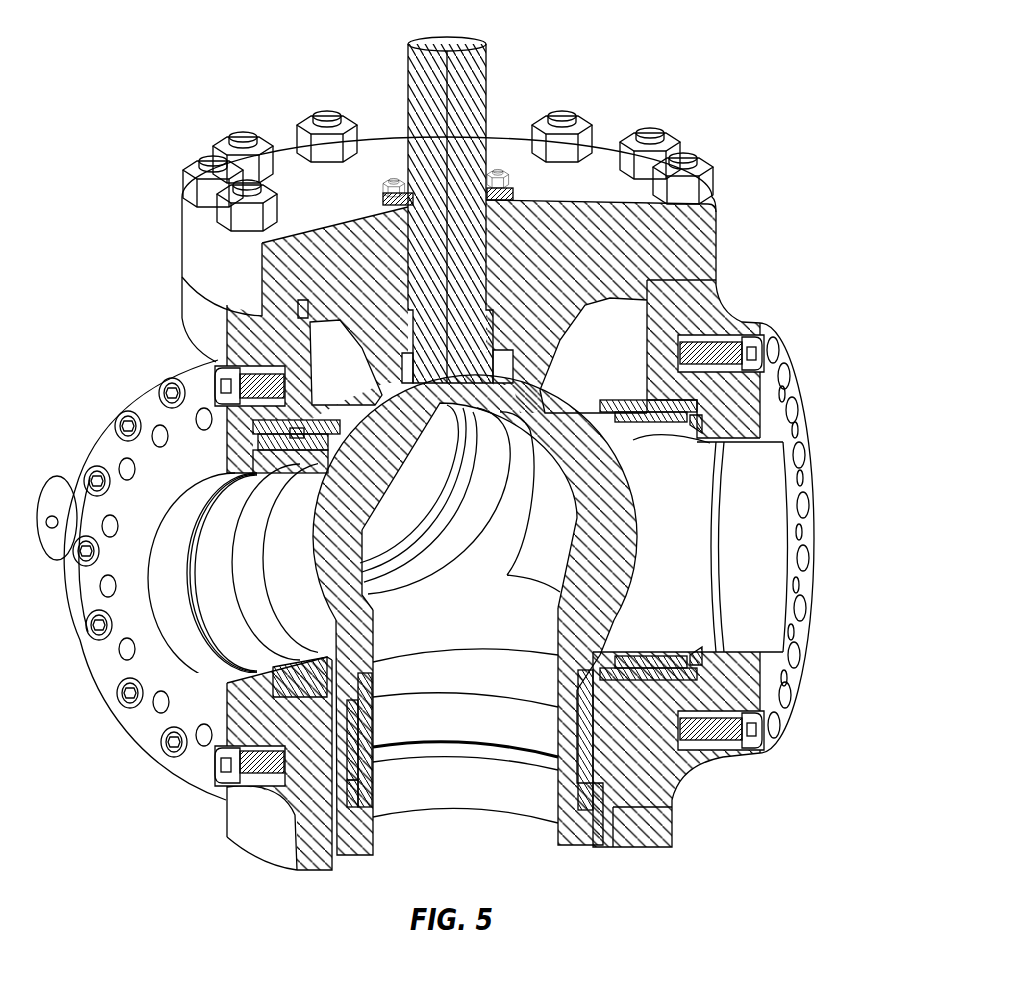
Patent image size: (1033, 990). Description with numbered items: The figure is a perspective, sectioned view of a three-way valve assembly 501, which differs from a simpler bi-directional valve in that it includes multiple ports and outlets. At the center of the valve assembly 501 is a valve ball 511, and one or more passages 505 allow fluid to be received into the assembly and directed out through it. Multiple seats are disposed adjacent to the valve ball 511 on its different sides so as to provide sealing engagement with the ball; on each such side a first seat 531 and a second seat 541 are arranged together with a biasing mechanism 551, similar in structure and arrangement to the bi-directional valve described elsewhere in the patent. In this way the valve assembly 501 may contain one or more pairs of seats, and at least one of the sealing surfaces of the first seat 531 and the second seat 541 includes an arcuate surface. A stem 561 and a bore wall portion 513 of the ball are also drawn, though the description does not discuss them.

The valve assembly 501 is at (622, 59).
The passage 505 is at (190, 647).
The valve ball 511 is at (623, 540).
The ball bore wall 513 is at (363, 640).
The first seat 531 is at (688, 466).
The second seat 541 is at (668, 442).
The biasing mechanism 551 is at (703, 423).
The stem 561 is at (488, 76).